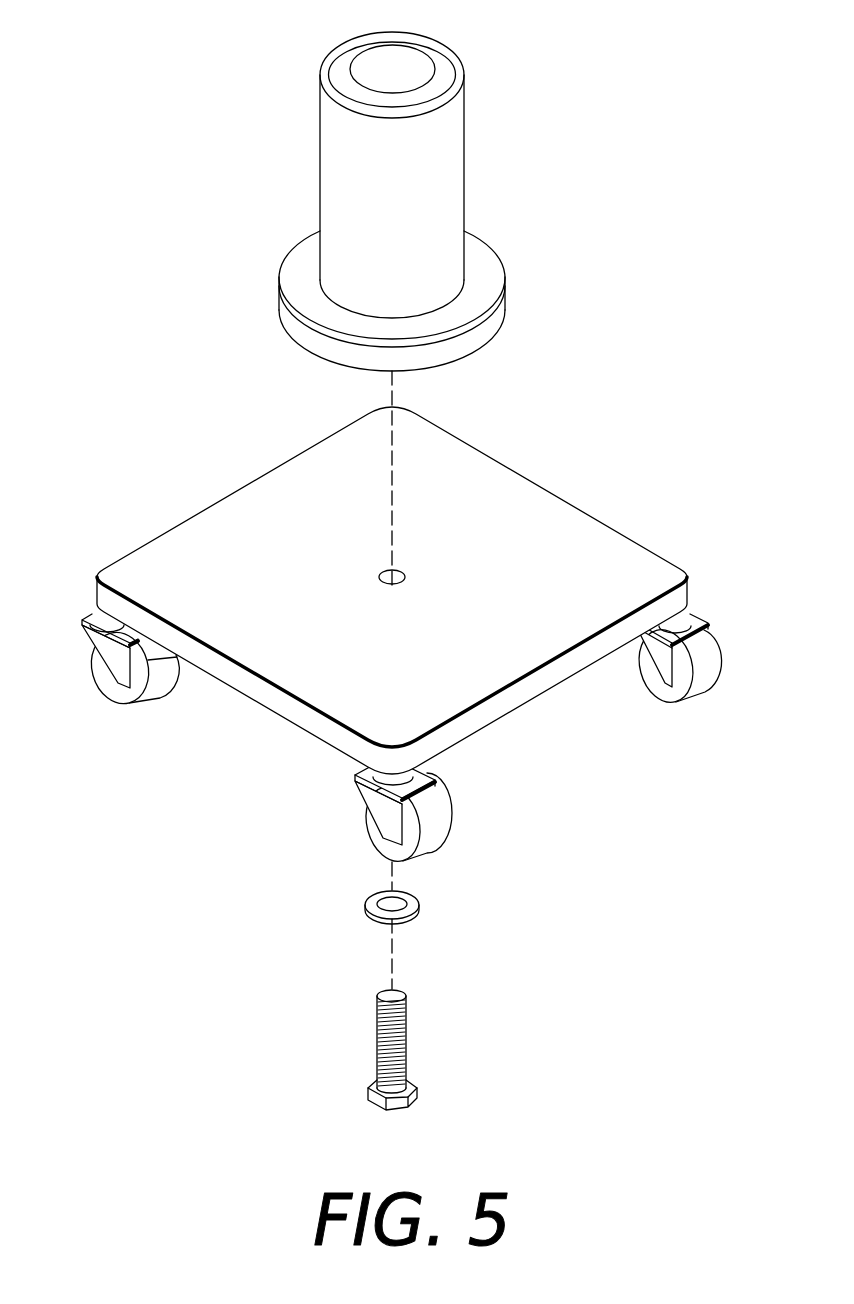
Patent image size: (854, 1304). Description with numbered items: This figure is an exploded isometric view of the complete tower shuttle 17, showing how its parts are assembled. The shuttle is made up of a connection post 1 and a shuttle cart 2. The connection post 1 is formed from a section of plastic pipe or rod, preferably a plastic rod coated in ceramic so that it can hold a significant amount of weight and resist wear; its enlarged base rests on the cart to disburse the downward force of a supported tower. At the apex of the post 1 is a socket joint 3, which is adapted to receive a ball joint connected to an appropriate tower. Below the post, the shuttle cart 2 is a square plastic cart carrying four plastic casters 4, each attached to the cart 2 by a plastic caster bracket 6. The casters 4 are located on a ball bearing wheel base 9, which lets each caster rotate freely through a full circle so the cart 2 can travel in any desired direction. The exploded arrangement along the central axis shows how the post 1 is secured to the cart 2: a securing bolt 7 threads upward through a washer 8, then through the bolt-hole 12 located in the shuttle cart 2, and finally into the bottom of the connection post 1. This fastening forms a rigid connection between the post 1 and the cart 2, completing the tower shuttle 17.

The connection post 1 is at (393, 205).
The shuttle cart 2 is at (270, 612).
The socket joint 3 is at (413, 67).
The caster 4 is at (432, 836).
The caster bracket 6 is at (382, 805).
The securing bolt 7 is at (378, 1035).
The washer 8 is at (413, 905).
The ball bearing wheel base 9 is at (427, 776).
The bolt-hole 12 is at (402, 577).
The tower shuttle 17 is at (137, 197).